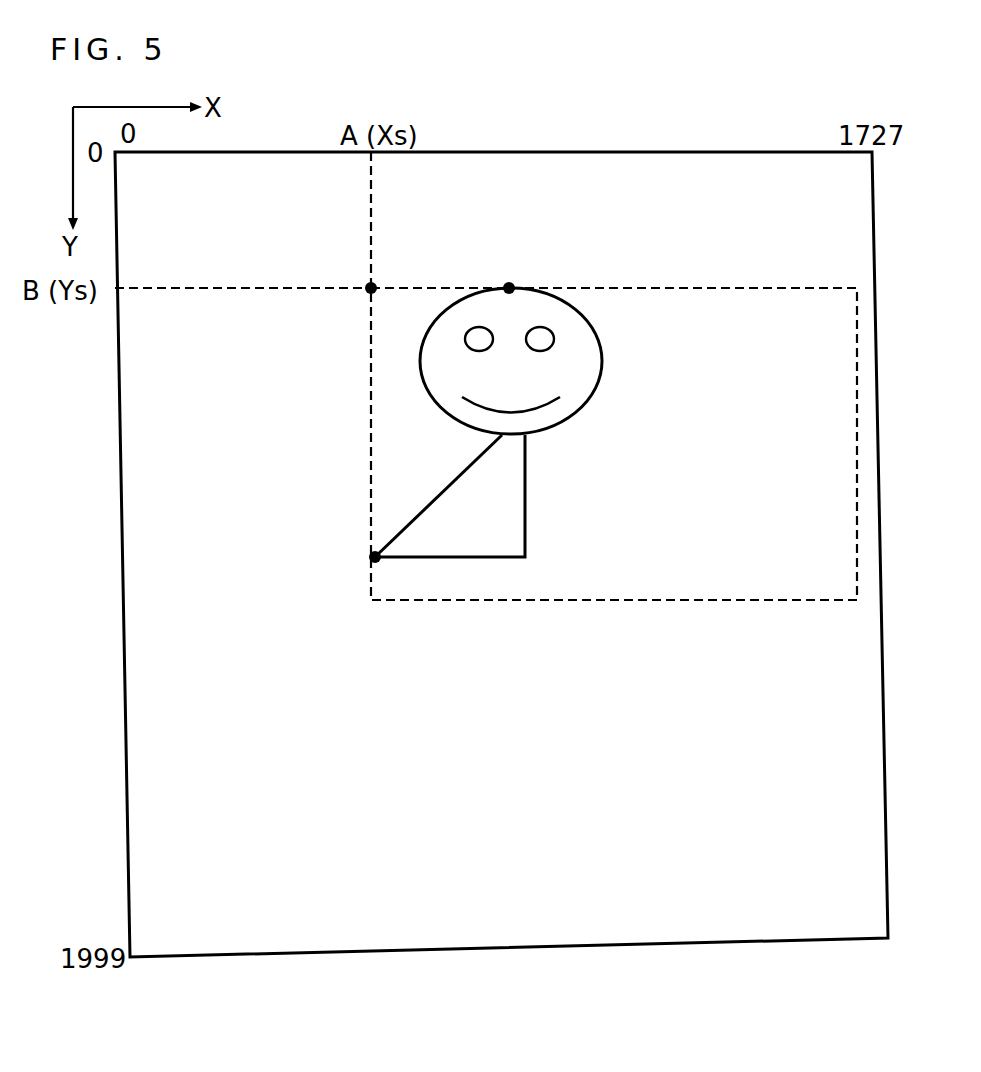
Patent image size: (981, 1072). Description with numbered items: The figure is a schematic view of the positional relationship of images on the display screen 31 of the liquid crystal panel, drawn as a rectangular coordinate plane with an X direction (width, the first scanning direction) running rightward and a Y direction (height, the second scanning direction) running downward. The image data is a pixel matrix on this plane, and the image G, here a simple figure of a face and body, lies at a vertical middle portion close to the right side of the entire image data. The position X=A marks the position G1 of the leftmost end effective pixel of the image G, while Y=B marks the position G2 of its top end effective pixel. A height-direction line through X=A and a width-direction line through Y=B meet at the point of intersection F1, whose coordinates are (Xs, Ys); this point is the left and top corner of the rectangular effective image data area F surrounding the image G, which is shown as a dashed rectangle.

The display screen 31 is at (263, 942).
The effective image data area F is at (543, 602).
The point of intersection F1 is at (372, 286).
The image G is at (622, 280).
The position of the leftmost end effective pixel G1 is at (375, 557).
The position of the top end effective pixel G2 is at (509, 288).